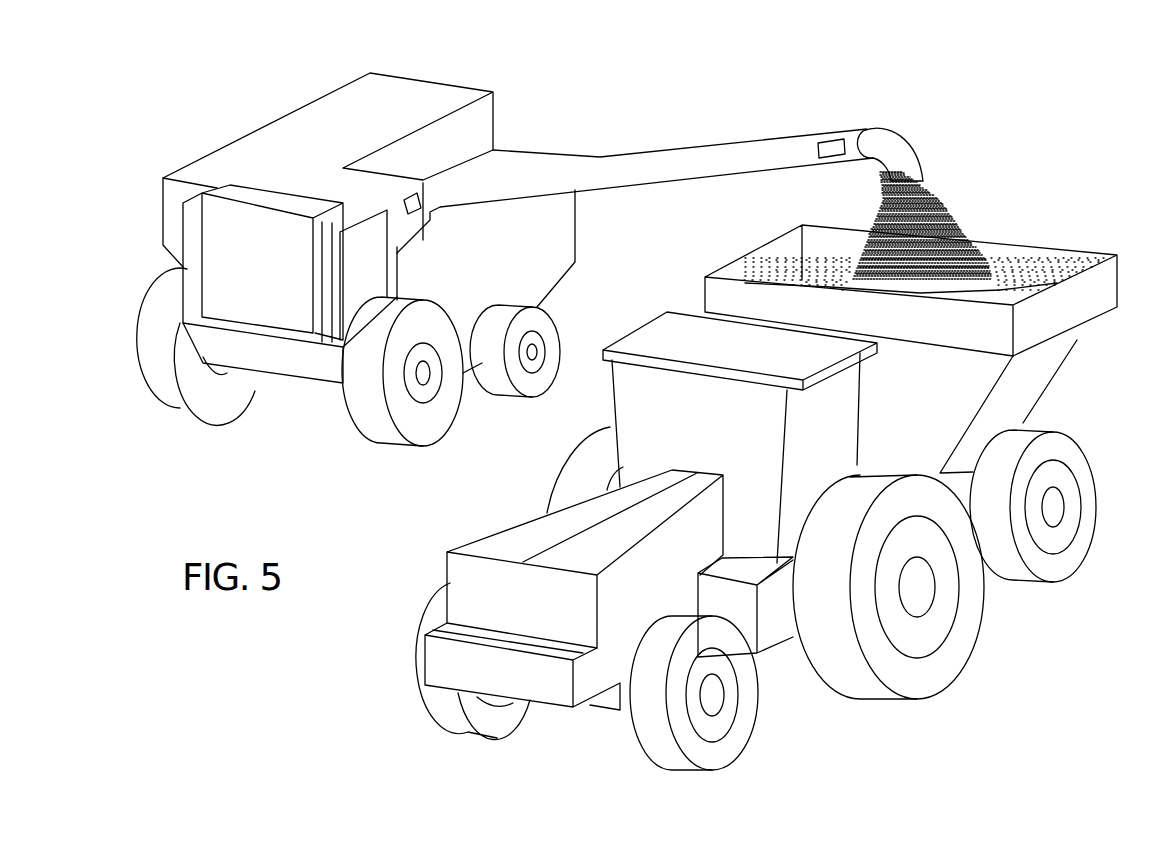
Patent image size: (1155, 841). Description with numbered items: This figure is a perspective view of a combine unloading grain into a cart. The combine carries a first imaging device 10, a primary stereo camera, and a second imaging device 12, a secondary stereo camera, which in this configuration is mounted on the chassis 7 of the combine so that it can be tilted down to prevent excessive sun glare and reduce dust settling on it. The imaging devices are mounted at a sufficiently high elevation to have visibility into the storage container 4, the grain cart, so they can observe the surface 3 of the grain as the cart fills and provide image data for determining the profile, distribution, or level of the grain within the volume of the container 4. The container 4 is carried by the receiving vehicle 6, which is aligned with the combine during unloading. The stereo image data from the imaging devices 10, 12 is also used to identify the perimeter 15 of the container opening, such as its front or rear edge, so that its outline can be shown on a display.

The surface of the grain 3 is at (990, 268).
The storage container 4 is at (700, 259).
The receiving vehicle 6 is at (777, 630).
The chassis 7 is at (474, 280).
The first imaging device 10 is at (828, 142).
The second imaging device 12 is at (413, 197).
The perimeter 15 is at (1083, 248).